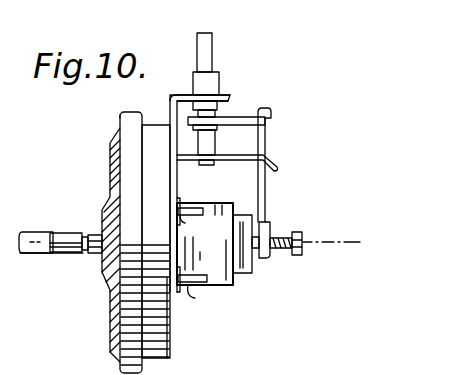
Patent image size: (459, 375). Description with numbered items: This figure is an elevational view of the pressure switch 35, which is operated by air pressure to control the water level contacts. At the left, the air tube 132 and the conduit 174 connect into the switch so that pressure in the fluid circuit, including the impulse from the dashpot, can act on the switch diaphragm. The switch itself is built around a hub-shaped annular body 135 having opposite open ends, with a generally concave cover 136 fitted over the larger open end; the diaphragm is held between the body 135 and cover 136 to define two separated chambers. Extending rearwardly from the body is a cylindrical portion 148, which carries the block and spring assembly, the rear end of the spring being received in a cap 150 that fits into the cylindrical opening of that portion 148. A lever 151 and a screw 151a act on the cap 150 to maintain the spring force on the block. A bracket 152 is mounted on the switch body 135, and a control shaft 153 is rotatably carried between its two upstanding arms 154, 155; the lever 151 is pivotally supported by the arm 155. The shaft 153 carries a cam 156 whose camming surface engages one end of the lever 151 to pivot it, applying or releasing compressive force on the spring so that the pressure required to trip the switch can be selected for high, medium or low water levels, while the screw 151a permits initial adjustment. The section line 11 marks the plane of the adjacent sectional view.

The section line 11 is at (72, 230).
The pressure switch 35 is at (94, 166).
The air tube 132 is at (63, 247).
The hub-shaped annular body 135 is at (173, 343).
The concave cover 136 is at (112, 335).
The rearwardly extending cylindrical portion 148 is at (237, 285).
The cap 150 is at (250, 213).
The lever 151 is at (270, 183).
The screw 151a is at (258, 258).
The bracket 152 is at (166, 108).
The control shaft 153 is at (212, 50).
The upstanding arm 154 is at (228, 97).
The upstanding arm 155 is at (280, 165).
The cam 156 is at (250, 117).
The conduit 174 is at (43, 232).